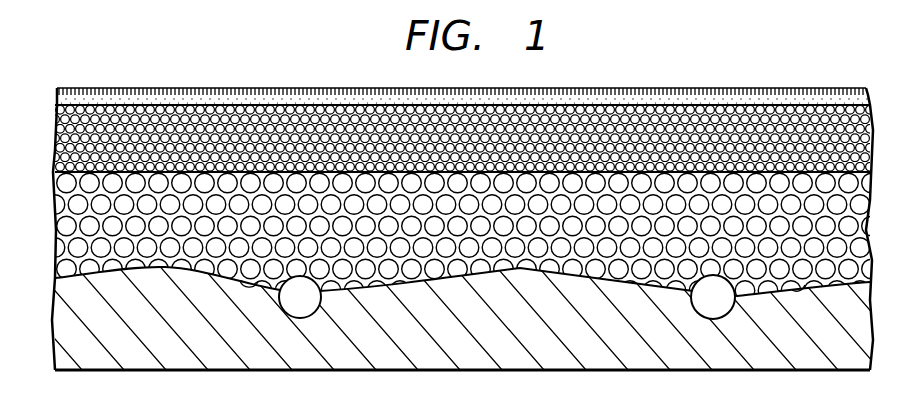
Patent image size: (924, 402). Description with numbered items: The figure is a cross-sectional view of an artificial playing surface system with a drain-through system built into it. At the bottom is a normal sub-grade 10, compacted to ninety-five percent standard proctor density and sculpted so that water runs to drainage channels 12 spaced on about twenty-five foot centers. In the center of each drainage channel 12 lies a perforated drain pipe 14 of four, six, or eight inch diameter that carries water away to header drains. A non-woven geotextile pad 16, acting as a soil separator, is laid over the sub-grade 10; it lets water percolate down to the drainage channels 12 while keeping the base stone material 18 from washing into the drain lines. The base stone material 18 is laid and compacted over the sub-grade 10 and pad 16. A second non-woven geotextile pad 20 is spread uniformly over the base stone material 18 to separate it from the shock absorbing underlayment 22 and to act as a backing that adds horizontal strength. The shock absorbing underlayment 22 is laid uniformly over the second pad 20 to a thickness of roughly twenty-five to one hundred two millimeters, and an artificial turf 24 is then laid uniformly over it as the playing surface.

The sub-grade 10 is at (478, 337).
The drainage channels 12 is at (277, 271).
The drain pipe 14 is at (300, 312).
The non-woven geotextile pad 16 is at (862, 258).
The base stone material 18 is at (478, 229).
The second non-woven geotextile pad 20 is at (68, 167).
The shock absorbing underlayment 22 is at (478, 156).
The artificial turf 24 is at (592, 103).